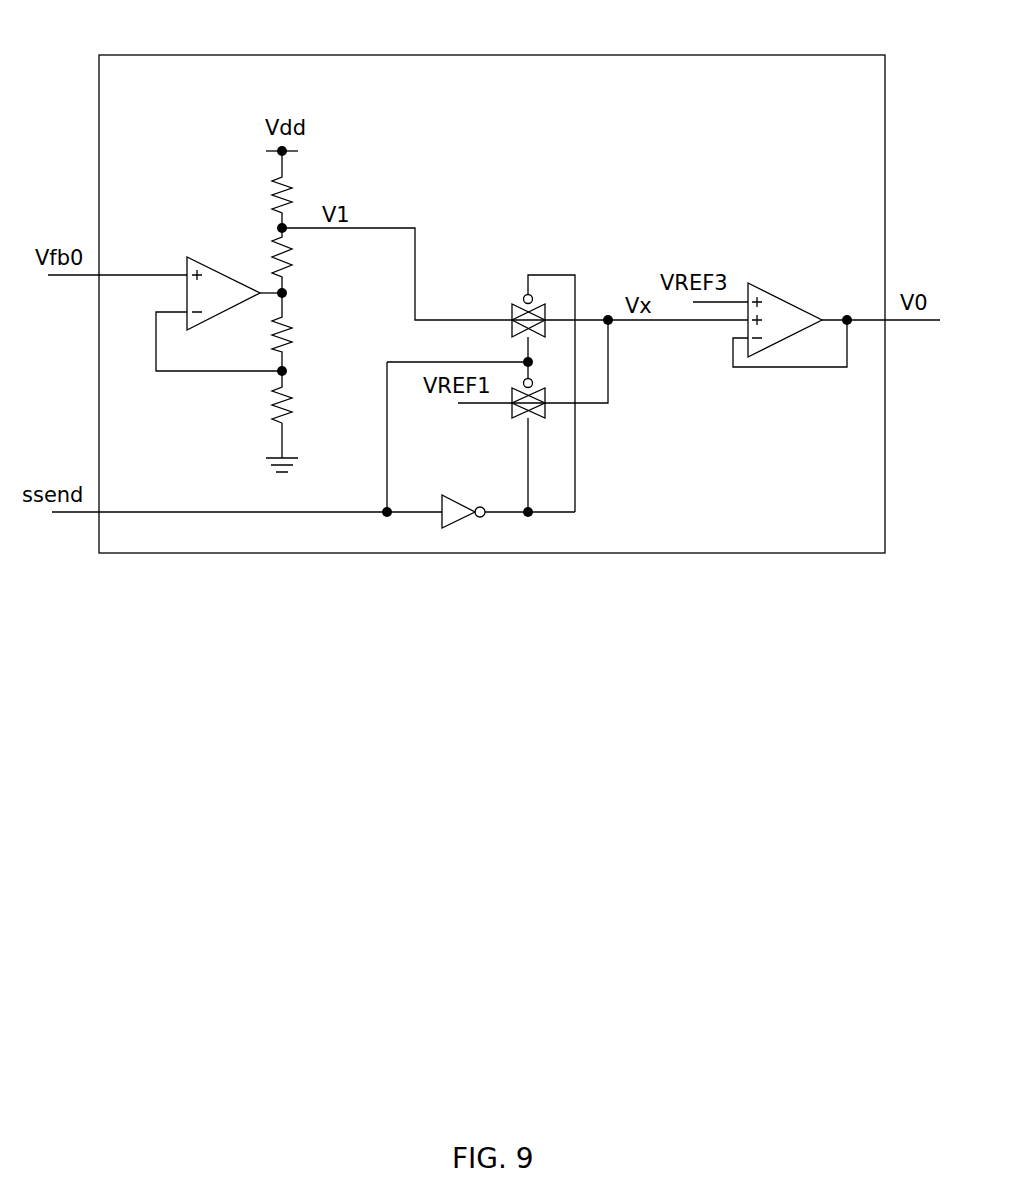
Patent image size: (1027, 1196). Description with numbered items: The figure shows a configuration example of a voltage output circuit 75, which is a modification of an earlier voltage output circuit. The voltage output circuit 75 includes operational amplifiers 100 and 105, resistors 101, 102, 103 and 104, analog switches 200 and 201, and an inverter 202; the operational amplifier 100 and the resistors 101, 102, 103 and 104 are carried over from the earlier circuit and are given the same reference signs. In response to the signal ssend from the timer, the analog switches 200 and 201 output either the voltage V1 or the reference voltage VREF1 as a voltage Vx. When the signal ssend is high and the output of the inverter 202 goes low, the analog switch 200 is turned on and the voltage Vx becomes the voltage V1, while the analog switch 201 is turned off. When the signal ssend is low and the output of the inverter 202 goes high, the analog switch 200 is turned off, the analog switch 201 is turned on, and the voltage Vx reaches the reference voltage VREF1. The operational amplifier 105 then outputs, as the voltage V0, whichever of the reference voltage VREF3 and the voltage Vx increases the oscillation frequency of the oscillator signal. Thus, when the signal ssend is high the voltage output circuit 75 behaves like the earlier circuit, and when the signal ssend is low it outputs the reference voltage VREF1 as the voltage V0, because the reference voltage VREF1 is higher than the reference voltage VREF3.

The voltage output circuit 75 is at (196, 55).
The operational amplifier 100 is at (192, 261).
The resistor 101 is at (293, 190).
The resistor 102 is at (295, 274).
The resistor 103 is at (292, 328).
The resistor 104 is at (292, 401).
The operational amplifier 105 is at (786, 303).
The analog switch 200 is at (512, 308).
The analog switch 201 is at (508, 422).
The inverter 202 is at (434, 496).